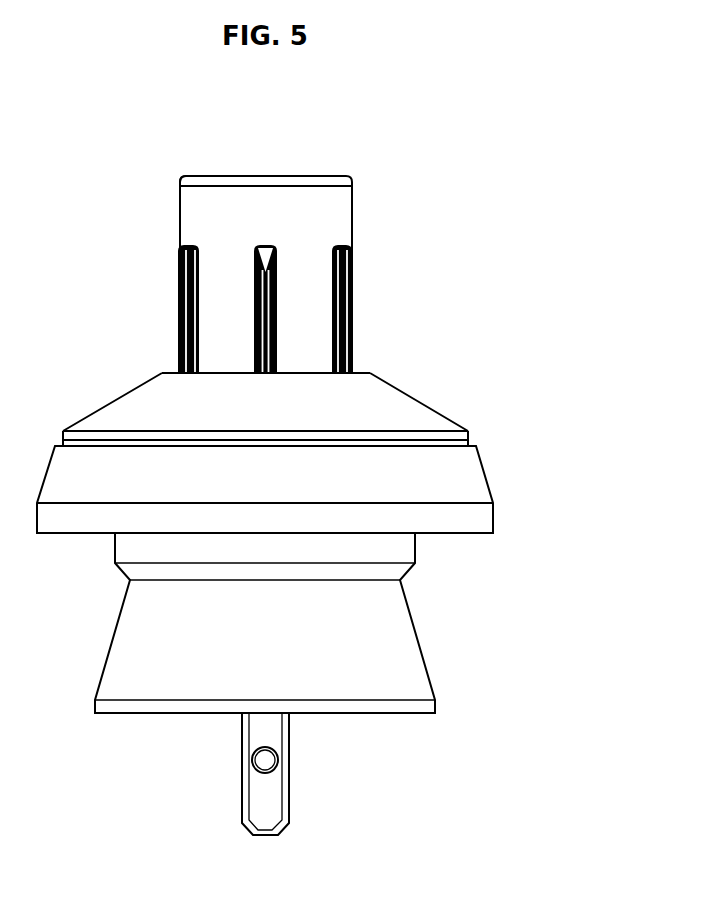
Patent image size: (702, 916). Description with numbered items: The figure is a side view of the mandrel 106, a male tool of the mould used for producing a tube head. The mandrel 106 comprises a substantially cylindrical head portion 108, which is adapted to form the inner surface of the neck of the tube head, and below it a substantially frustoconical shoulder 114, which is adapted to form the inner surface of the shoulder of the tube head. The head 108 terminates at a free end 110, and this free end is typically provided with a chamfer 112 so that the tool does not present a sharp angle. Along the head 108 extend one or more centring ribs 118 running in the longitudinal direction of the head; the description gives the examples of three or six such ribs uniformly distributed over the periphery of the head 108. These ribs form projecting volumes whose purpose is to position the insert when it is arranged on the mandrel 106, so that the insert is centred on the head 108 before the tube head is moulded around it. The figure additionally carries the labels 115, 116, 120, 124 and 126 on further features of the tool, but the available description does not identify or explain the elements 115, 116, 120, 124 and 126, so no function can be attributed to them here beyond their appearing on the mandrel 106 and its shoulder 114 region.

The mandrel 106 is at (375, 260).
The head portion 108 is at (353, 208).
The free end 110 is at (277, 176).
The chamfer 112 is at (183, 178).
The shoulder 114 is at (428, 405).
The shoulder corner 115 is at (355, 372).
The tapered shoulder 116 is at (127, 413).
The centring ribs 118 is at (345, 312).
The cap face 120 is at (283, 226).
The band 124 is at (398, 385).
The band edge 126 is at (476, 437).